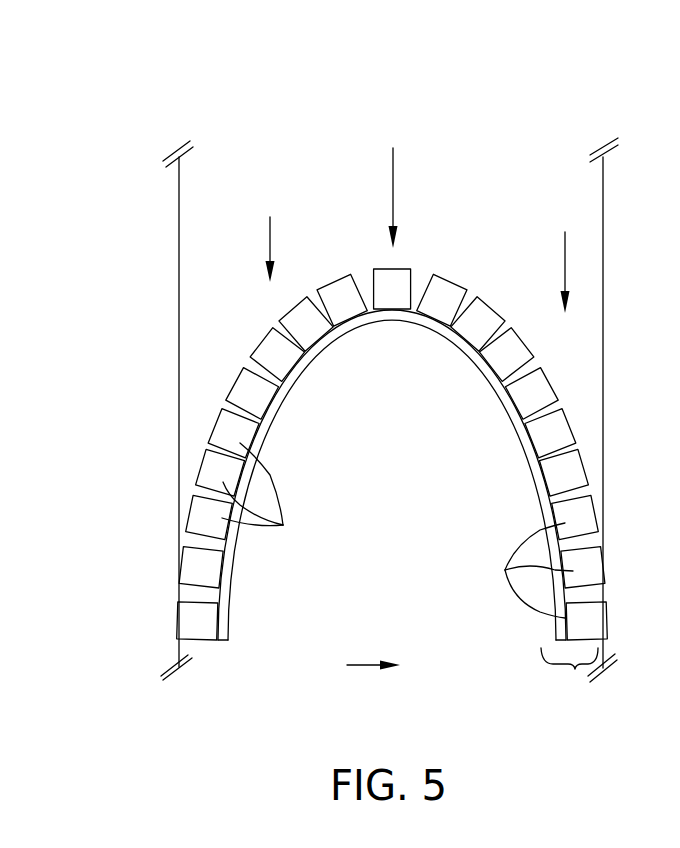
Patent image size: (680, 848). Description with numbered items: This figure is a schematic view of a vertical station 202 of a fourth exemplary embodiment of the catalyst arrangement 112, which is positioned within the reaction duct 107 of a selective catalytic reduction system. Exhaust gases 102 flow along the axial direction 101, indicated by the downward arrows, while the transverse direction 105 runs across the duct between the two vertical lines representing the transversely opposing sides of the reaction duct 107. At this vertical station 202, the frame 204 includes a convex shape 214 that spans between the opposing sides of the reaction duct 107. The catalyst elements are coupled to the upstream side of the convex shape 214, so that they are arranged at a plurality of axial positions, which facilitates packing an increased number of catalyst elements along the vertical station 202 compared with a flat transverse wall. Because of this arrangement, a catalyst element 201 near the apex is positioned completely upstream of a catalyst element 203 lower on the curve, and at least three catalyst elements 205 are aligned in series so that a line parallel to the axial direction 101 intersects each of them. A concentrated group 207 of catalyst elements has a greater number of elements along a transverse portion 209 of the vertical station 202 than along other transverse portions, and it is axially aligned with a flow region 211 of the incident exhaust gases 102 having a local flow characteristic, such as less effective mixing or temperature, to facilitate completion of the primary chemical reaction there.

The axial direction 101 is at (393, 192).
The exhaust gases 102 is at (270, 240).
The transverse direction 105 is at (362, 667).
The reaction duct 107 is at (179, 318).
The catalyst arrangement 112 is at (493, 100).
The catalyst element 201 is at (333, 287).
The vertical station 202 is at (502, 155).
The catalyst element 203 is at (215, 430).
The frame 204 is at (232, 558).
The catalyst elements 205 is at (278, 497).
The concentrated group 207 is at (510, 570).
The transverse portion 209 is at (569, 675).
The flow region 211 is at (563, 259).
The convex shape 214 is at (232, 594).